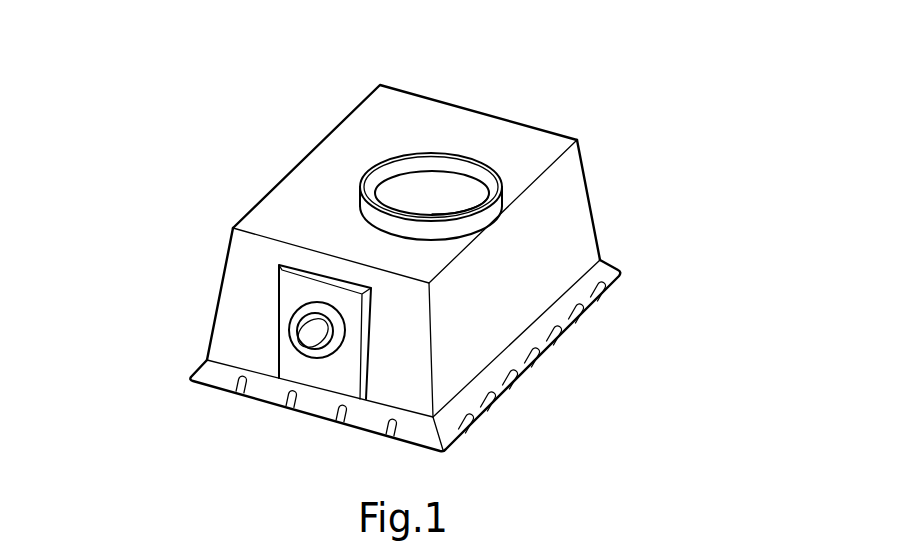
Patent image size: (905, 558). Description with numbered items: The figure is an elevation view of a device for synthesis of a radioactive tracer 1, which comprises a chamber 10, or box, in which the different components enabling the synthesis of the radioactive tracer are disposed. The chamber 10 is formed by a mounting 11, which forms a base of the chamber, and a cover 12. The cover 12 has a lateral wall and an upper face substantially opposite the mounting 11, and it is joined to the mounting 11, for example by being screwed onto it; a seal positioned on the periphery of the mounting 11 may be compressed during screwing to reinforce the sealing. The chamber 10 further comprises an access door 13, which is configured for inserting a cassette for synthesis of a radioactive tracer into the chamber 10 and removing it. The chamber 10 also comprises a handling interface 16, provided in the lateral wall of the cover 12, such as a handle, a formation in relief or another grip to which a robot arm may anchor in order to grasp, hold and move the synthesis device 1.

The device for synthesis of a radioactive tracer 1 is at (207, 117).
The chamber 10 is at (233, 203).
The mounting 11 is at (545, 338).
The cover 12 is at (369, 128).
The access door 13 is at (487, 160).
The handling interface 16 is at (287, 295).